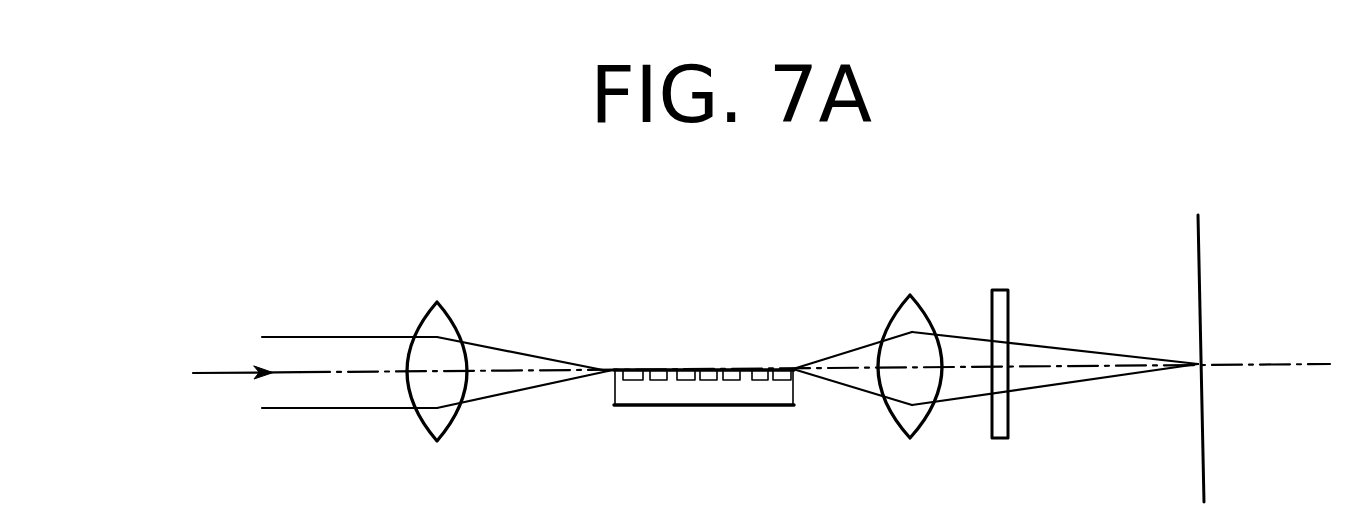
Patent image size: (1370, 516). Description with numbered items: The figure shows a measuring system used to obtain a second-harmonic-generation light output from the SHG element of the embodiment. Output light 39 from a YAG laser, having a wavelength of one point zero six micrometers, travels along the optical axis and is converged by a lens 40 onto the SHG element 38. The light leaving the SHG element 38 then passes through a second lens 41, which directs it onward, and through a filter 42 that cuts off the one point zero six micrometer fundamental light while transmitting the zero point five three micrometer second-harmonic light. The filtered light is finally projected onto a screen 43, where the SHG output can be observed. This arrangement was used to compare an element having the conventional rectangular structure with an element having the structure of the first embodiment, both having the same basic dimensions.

The SHG element 38 is at (728, 368).
The output light 39 is at (232, 373).
The lens 40 is at (437, 318).
The lens 41 is at (910, 318).
The filter 42 is at (1000, 318).
The screen 43 is at (1202, 283).